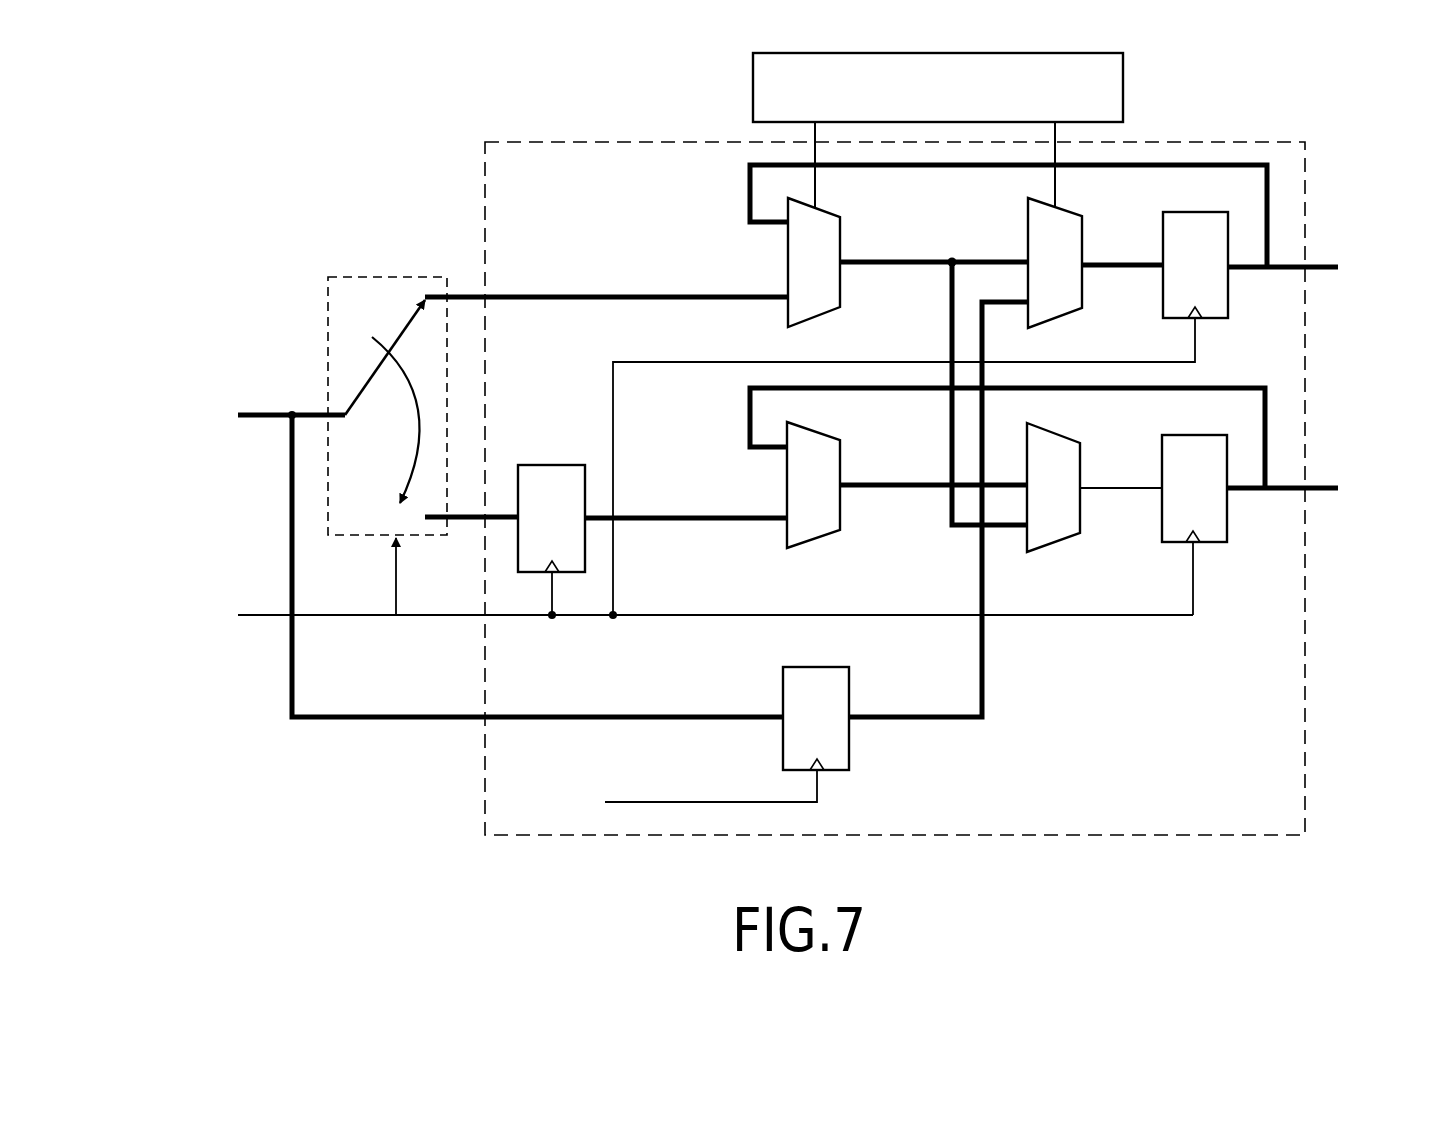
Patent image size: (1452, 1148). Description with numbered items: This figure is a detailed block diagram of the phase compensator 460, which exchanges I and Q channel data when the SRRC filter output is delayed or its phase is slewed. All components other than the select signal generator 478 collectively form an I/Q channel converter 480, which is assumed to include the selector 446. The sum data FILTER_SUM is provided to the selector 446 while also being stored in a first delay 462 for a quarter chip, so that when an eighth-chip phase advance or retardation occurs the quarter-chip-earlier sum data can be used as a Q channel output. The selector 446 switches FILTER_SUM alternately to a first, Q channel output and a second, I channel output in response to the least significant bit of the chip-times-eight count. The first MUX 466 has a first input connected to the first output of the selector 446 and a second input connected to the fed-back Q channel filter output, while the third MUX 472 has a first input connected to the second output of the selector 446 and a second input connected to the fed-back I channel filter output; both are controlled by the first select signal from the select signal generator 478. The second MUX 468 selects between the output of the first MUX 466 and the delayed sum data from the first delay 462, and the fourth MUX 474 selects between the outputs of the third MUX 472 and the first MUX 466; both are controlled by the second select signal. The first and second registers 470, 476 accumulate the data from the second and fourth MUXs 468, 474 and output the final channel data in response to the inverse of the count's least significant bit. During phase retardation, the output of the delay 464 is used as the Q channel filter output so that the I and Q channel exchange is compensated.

The phase compensator 460 is at (781, 444).
The selector 446 is at (407, 277).
The first delay 462 is at (820, 667).
The first delay 464 is at (556, 465).
The first MUX 466 is at (826, 212).
The second MUX 468 is at (1066, 211).
The first register 470 is at (1197, 212).
The third MUX 472 is at (826, 437).
The fourth MUX 474 is at (1066, 438).
The second register 476 is at (1196, 435).
The select signal generator 478 is at (1124, 90).
The I/Q channel converter 480 is at (1306, 697).